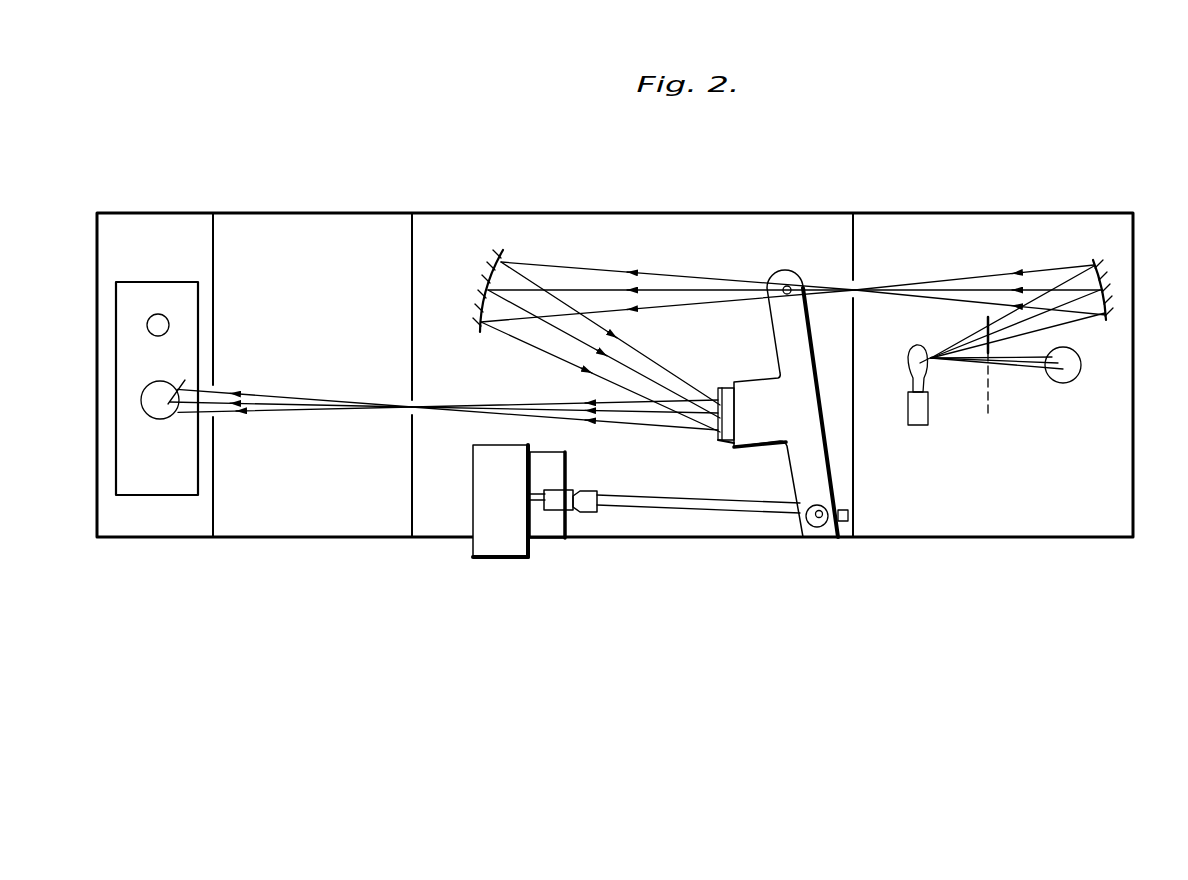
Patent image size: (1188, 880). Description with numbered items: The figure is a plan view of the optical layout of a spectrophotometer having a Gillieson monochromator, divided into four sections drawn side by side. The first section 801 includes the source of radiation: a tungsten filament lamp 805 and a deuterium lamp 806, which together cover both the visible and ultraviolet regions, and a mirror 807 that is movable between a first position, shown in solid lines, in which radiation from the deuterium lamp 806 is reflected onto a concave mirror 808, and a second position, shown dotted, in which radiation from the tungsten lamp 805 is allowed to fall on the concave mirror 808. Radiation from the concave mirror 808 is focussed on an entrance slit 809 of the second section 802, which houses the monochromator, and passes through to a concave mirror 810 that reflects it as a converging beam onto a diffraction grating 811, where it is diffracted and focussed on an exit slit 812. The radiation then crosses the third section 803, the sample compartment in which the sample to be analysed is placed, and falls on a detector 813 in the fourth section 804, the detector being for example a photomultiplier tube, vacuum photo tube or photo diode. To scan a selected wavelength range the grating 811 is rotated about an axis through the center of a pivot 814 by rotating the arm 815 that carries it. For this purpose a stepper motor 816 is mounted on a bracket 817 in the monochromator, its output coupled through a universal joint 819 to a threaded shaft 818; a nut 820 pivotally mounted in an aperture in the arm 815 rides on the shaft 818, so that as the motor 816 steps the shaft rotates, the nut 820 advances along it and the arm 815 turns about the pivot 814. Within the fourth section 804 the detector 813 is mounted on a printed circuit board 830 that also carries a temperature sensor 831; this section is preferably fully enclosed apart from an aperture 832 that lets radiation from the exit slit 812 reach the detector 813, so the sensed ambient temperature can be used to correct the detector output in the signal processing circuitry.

The first section 801 is at (1073, 244).
The second section 802 is at (803, 244).
The third section 803 is at (351, 244).
The fourth section 804 is at (166, 244).
The tungsten filament lamp 805 is at (912, 372).
The deuterium lamp 806 is at (1066, 384).
The mirror 807 is at (993, 353).
The concave mirror 808 is at (1097, 272).
The entrance slit 809 is at (857, 285).
The concave mirror 810 is at (484, 276).
The diffraction grating 811 is at (716, 405).
The exit slit 812 is at (410, 399).
The detector 813 is at (159, 421).
The pivot 814 is at (798, 284).
The arm 815 is at (823, 492).
The stepper motor 816 is at (486, 546).
The bracket 817 is at (553, 528).
The threaded shaft 818 is at (683, 510).
The universal joint 819 is at (589, 512).
The nut 820 is at (836, 518).
The printed circuit board 830 is at (198, 496).
The temperature sensor 831 is at (167, 320).
The aperture 832 is at (215, 418).